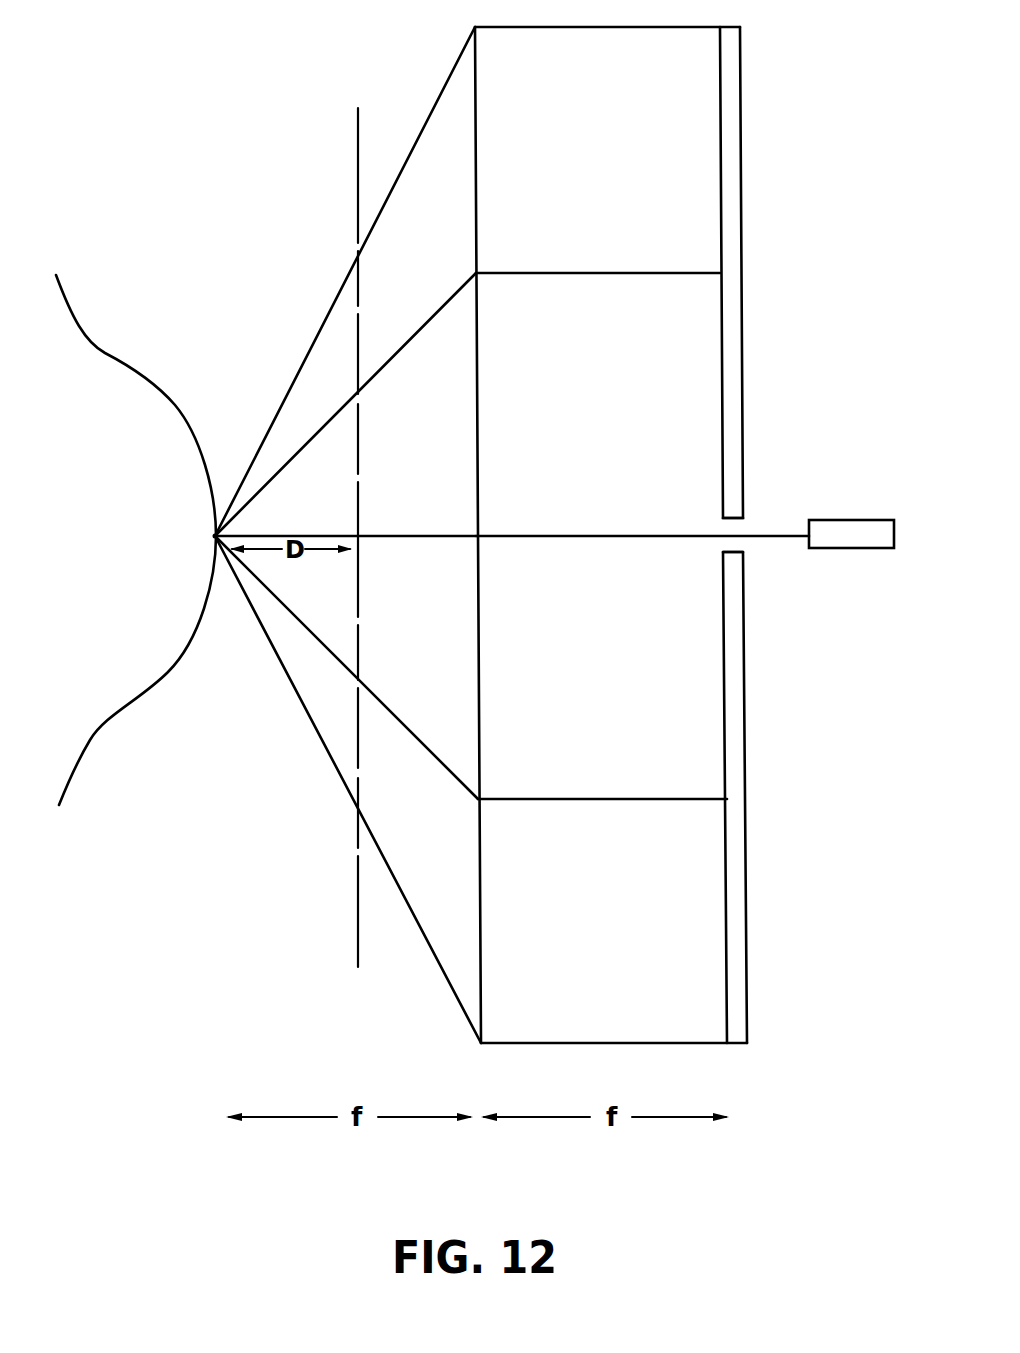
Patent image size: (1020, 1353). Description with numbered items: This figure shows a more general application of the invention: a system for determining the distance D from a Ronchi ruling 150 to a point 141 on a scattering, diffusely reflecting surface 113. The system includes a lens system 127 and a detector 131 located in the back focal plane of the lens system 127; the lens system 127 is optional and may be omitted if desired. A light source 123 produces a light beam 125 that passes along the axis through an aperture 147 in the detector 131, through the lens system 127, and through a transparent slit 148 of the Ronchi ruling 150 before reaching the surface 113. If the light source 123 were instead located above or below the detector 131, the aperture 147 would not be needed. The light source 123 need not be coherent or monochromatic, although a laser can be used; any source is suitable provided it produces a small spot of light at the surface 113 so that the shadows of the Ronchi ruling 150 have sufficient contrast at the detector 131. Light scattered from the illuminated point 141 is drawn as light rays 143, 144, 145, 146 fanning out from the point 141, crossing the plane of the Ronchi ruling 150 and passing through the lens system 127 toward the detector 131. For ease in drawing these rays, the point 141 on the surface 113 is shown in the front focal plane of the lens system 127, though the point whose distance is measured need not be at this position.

The diffusely reflecting surface 113 is at (100, 350).
The point 141 is at (212, 539).
The Ronchi ruling 150 is at (357, 178).
The light ray 143 is at (396, 183).
The light ray 144 is at (410, 343).
The light ray 145 is at (374, 695).
The light ray 146 is at (395, 877).
The transparent slit 148 is at (358, 530).
The light beam 125 is at (492, 537).
The lens system 127 is at (476, 167).
The detector 131 is at (726, 178).
The aperture 147 is at (742, 527).
The light source 123 is at (849, 531).